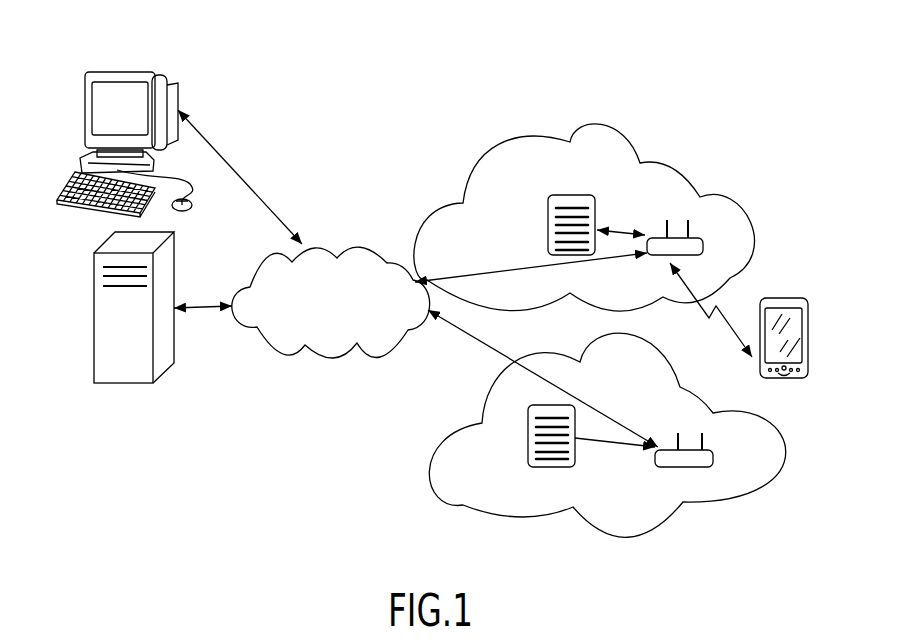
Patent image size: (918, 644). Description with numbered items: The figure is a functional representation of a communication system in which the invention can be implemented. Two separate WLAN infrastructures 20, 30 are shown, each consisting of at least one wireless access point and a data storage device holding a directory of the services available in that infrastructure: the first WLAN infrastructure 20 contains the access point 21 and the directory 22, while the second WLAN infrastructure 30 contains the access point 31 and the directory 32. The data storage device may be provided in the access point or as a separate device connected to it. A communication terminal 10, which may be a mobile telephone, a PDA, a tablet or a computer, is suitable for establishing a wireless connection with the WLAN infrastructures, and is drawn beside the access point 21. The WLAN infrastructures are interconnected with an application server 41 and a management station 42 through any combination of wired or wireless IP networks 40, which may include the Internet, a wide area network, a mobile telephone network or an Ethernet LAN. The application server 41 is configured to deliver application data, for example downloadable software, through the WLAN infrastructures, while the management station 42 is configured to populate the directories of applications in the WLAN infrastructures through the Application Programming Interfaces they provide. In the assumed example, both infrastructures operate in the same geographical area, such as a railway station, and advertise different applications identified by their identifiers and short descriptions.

The communication terminal 10 is at (787, 298).
The WLAN infrastructure 20 is at (497, 143).
The wireless access point 21 is at (700, 237).
The directory 22 is at (573, 195).
The WLAN infrastructure 30 is at (470, 512).
The wireless access point 31 is at (698, 467).
The directory 32 is at (550, 467).
The IP networks 40 is at (363, 247).
The application server 41 is at (94, 322).
The management station 42 is at (75, 75).